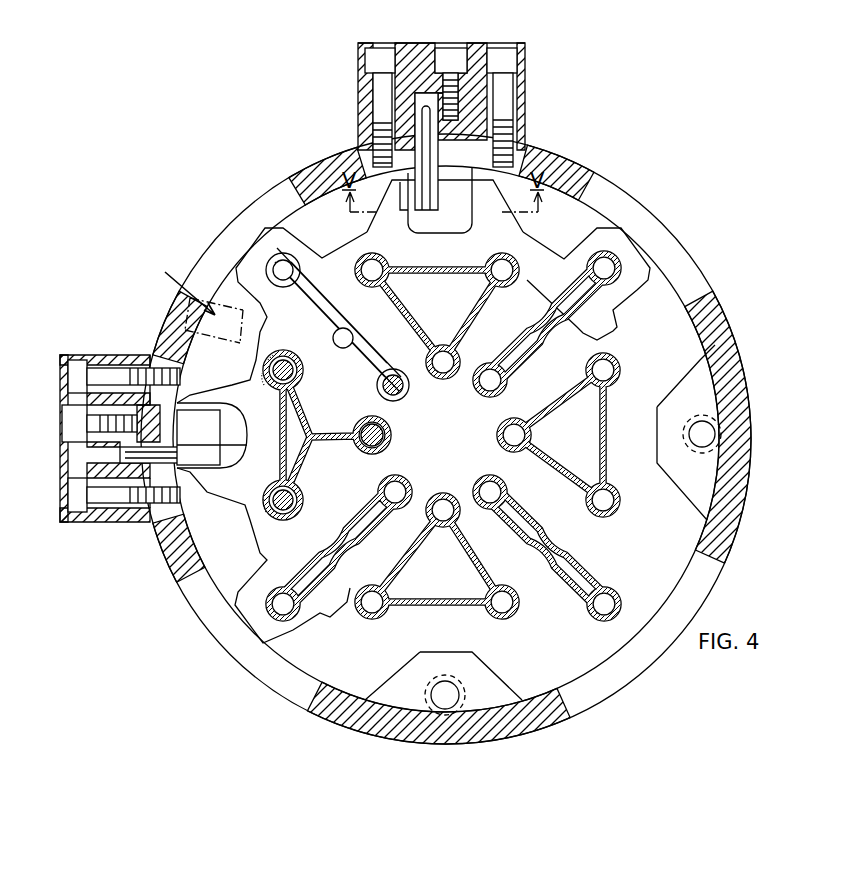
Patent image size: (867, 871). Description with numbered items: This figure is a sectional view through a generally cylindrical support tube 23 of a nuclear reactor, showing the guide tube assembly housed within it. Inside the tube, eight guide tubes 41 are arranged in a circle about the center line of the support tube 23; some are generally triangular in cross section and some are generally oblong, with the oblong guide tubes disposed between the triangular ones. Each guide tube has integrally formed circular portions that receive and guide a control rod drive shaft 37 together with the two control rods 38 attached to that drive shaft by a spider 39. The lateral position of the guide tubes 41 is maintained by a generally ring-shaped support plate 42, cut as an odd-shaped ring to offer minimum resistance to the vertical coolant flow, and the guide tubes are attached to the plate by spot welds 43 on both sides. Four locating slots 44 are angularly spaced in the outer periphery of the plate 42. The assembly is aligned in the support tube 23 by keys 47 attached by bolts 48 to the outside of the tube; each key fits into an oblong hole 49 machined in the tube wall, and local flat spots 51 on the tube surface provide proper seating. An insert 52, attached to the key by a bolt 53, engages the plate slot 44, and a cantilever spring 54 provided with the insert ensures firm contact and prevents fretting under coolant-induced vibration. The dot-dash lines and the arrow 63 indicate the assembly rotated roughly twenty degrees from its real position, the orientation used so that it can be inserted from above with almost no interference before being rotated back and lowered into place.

The support tube 23 is at (722, 513).
The control rod drive shaft 37 is at (394, 399).
The control rod 38 is at (291, 262).
The spider 39 is at (330, 432).
The guide tube 41 is at (616, 384).
The support plate 42 is at (614, 228).
The spot weld 43 is at (400, 266).
The locating slot 44 is at (238, 440).
The key 47 is at (572, 88).
The bolt 48 is at (388, 58).
The oblong hole 49 is at (152, 478).
The flat spot 51 is at (388, 122).
The insert 52 is at (426, 92).
The bolt 53 is at (452, 58).
The cantilever spring 54 is at (428, 156).
The arrow 63 is at (189, 290).